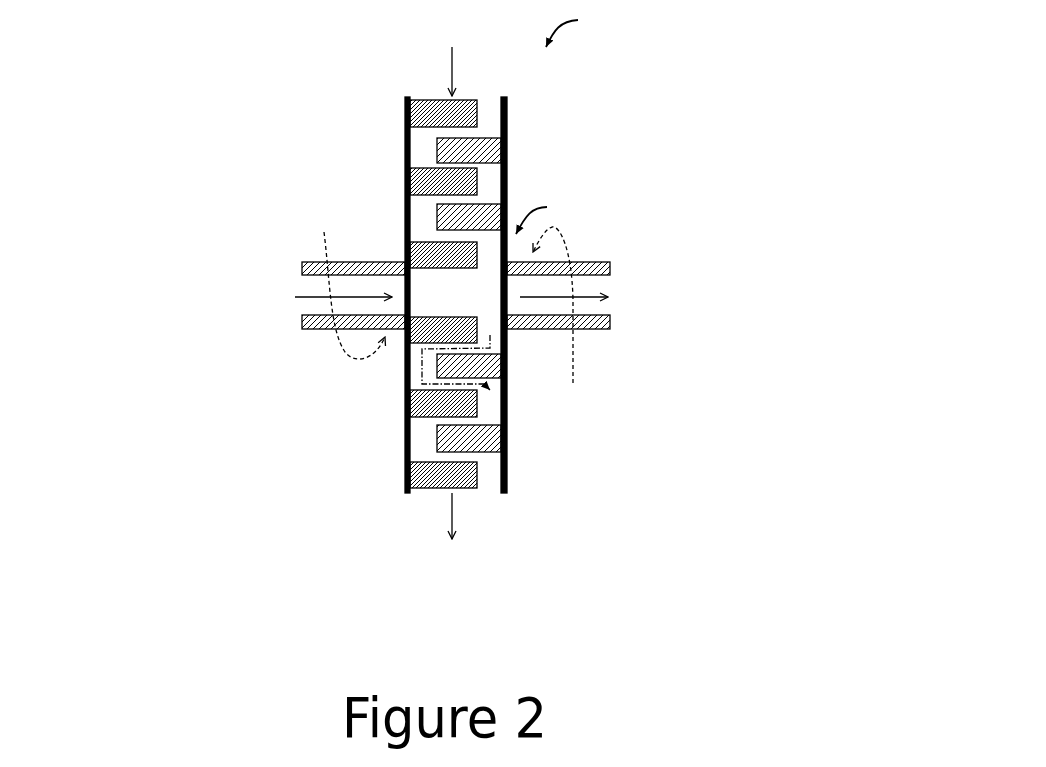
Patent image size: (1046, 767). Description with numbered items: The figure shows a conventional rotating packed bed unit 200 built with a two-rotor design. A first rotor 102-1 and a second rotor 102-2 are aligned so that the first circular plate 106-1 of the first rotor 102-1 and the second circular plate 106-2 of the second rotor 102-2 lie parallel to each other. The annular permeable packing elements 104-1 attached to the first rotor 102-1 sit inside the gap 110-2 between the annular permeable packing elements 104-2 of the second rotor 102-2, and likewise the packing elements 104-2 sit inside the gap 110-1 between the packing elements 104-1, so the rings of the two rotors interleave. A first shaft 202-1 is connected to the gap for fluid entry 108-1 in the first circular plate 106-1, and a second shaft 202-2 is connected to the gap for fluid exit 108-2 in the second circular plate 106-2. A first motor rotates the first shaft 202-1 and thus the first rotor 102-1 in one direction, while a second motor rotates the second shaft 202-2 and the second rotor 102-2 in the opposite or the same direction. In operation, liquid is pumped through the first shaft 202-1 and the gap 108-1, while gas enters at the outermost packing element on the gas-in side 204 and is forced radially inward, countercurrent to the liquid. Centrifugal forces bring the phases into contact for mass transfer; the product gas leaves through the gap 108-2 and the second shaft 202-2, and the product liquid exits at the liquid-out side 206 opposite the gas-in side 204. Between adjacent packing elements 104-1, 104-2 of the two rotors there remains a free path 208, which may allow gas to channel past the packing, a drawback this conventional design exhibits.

The rotating packed bed unit 200 is at (660, 60).
The first rotor 102-1 is at (287, 235).
The second rotor 102-2 is at (677, 236).
The annular permeable packing elements of the first rotor 104-1 is at (408, 170).
The annular permeable packing elements of the second rotor 104-2 is at (460, 217).
The first circular plate 106-1 is at (407, 477).
The second circular plate 106-2 is at (507, 487).
The gap for fluid entry 108-1 is at (250, 315).
The gap for fluid exit 108-2 is at (693, 315).
The gap between the annular permeable packing elements of the first rotor 110-1 is at (423, 442).
The gap between the annular permeable packing elements of the second rotor 110-2 is at (493, 407).
The first shaft 202-1 is at (368, 331).
The second shaft 202-2 is at (597, 332).
The gas-in side 204 is at (463, 40).
The liquid-out side 206 is at (465, 586).
The free path 208 is at (452, 362).